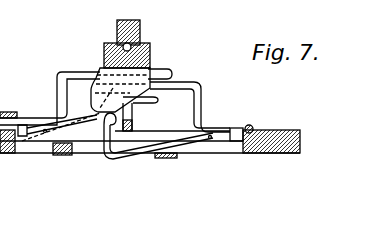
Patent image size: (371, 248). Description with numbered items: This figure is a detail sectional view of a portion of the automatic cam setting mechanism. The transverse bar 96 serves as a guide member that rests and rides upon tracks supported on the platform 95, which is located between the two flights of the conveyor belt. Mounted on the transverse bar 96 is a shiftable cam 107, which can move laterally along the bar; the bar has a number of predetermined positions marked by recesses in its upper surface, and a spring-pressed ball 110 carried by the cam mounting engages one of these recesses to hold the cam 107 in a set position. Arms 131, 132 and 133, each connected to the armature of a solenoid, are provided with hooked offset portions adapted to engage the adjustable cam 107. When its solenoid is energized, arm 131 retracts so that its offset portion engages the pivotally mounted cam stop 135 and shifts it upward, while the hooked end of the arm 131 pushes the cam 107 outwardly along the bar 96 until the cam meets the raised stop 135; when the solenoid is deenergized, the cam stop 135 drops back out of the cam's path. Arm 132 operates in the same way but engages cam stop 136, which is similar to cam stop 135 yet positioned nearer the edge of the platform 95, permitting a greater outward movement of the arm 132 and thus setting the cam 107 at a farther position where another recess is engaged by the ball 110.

The platform 95 is at (278, 130).
The transverse bar 96 is at (150, 59).
The shiftable cam 107 is at (110, 88).
The spring-pressed ball 110 is at (122, 47).
The arm 131 is at (55, 100).
The arm 132 is at (203, 107).
The arm 133 is at (133, 118).
The cam stop 135 is at (85, 137).
The cam stop 136 is at (137, 157).